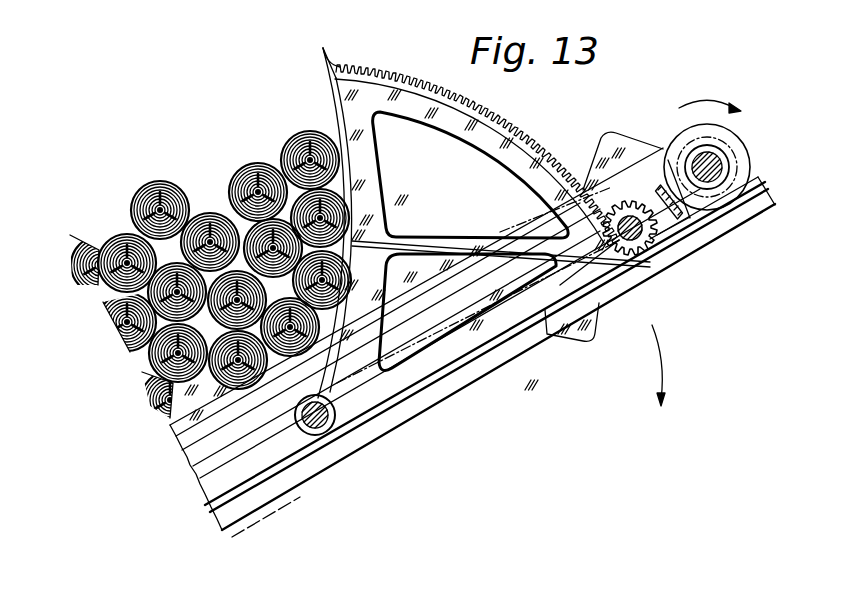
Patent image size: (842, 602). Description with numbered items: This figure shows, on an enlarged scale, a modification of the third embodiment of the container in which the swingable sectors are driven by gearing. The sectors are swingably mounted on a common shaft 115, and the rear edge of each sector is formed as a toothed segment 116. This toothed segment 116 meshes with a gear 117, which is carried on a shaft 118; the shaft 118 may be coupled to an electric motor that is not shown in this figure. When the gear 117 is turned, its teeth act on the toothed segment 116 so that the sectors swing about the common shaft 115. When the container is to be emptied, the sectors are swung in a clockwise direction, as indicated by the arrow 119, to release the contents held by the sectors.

The common shaft 115 is at (323, 431).
The toothed segment 116 is at (531, 141).
The gear 117 is at (664, 234).
The shaft 118 is at (645, 245).
The arrow 119 is at (657, 356).